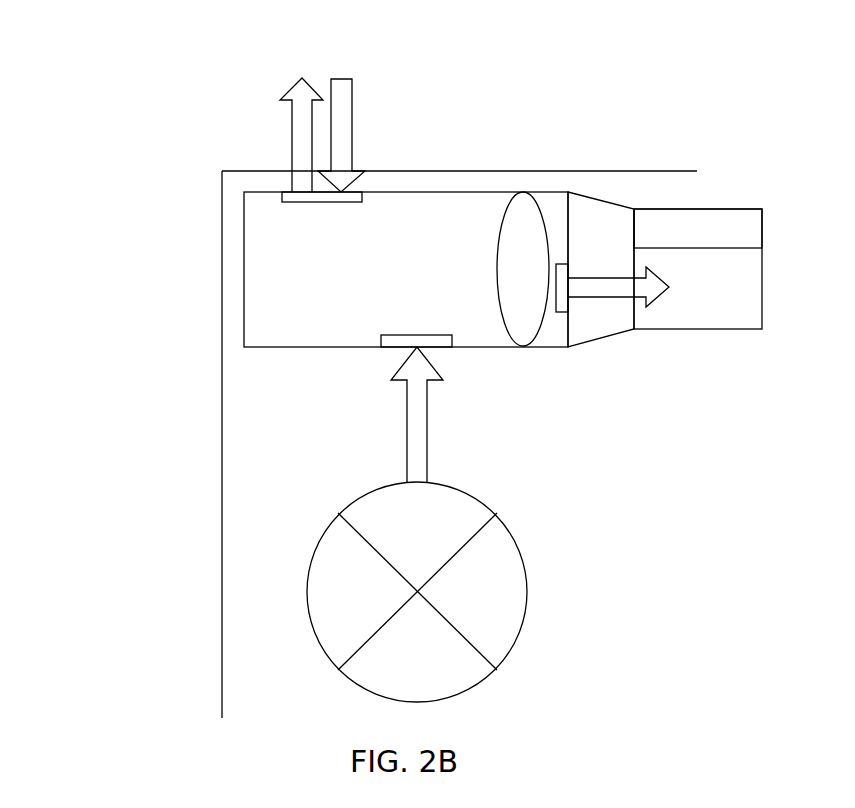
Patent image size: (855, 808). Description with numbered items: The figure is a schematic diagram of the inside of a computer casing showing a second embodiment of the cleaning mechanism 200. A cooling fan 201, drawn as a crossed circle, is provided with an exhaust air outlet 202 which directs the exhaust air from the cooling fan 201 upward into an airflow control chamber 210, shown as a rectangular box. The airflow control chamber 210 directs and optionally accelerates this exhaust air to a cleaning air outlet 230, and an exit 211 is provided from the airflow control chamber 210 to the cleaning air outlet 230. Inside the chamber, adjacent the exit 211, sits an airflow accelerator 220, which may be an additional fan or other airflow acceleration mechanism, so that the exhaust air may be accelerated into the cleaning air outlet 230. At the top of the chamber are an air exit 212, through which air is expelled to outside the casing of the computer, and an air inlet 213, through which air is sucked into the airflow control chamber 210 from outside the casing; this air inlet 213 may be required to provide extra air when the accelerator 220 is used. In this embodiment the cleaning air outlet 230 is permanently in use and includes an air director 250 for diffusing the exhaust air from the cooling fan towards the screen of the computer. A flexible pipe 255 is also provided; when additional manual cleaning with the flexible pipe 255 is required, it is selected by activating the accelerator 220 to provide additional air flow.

The cleaning mechanism 200 is at (156, 64).
The cooling fan 201 is at (318, 597).
The exhaust air outlet 202 is at (380, 340).
The airflow control chamber 210 is at (250, 325).
The exit 211 is at (563, 312).
The air exit 212 is at (302, 193).
The air inlet 213 is at (342, 193).
The airflow accelerator 220 is at (522, 345).
The cleaning air outlet 230 is at (618, 334).
The air director 250 is at (700, 324).
The flexible pipe 255 is at (733, 217).